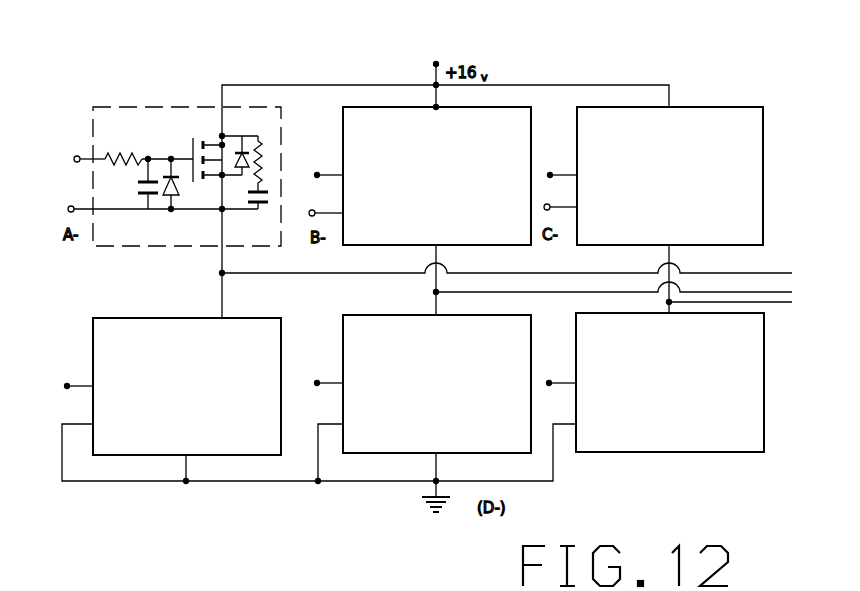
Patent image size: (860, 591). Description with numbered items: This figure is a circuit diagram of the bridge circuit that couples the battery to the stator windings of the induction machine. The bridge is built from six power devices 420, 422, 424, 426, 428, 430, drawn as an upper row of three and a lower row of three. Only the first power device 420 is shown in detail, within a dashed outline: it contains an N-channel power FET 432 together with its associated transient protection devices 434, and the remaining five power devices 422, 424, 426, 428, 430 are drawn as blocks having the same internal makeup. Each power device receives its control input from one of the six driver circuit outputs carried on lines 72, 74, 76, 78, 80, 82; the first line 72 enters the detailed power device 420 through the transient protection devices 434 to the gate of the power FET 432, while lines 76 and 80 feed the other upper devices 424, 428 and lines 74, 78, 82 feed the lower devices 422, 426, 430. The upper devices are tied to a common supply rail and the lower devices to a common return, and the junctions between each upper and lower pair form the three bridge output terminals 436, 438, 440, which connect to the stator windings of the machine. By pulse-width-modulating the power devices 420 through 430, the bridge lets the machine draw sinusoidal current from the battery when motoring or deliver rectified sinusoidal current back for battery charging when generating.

The power device 420 is at (168, 107).
The power device 422 is at (118, 457).
The power device 424 is at (380, 107).
The power device 426 is at (407, 455).
The power device 428 is at (727, 107).
The power device 430 is at (685, 453).
The N-channel power FET 432 is at (194, 138).
The transient protection devices 434 is at (136, 148).
The bridge output terminal 436 is at (223, 274).
The bridge output terminal 438 is at (437, 291).
The bridge output terminal 440 is at (670, 303).
The driver circuit output line 72 is at (76, 158).
The driver circuit output line 74 is at (67, 386).
The driver circuit output line 76 is at (316, 174).
The driver circuit output line 78 is at (316, 383).
The driver circuit output line 80 is at (550, 175).
The driver circuit output line 82 is at (549, 383).